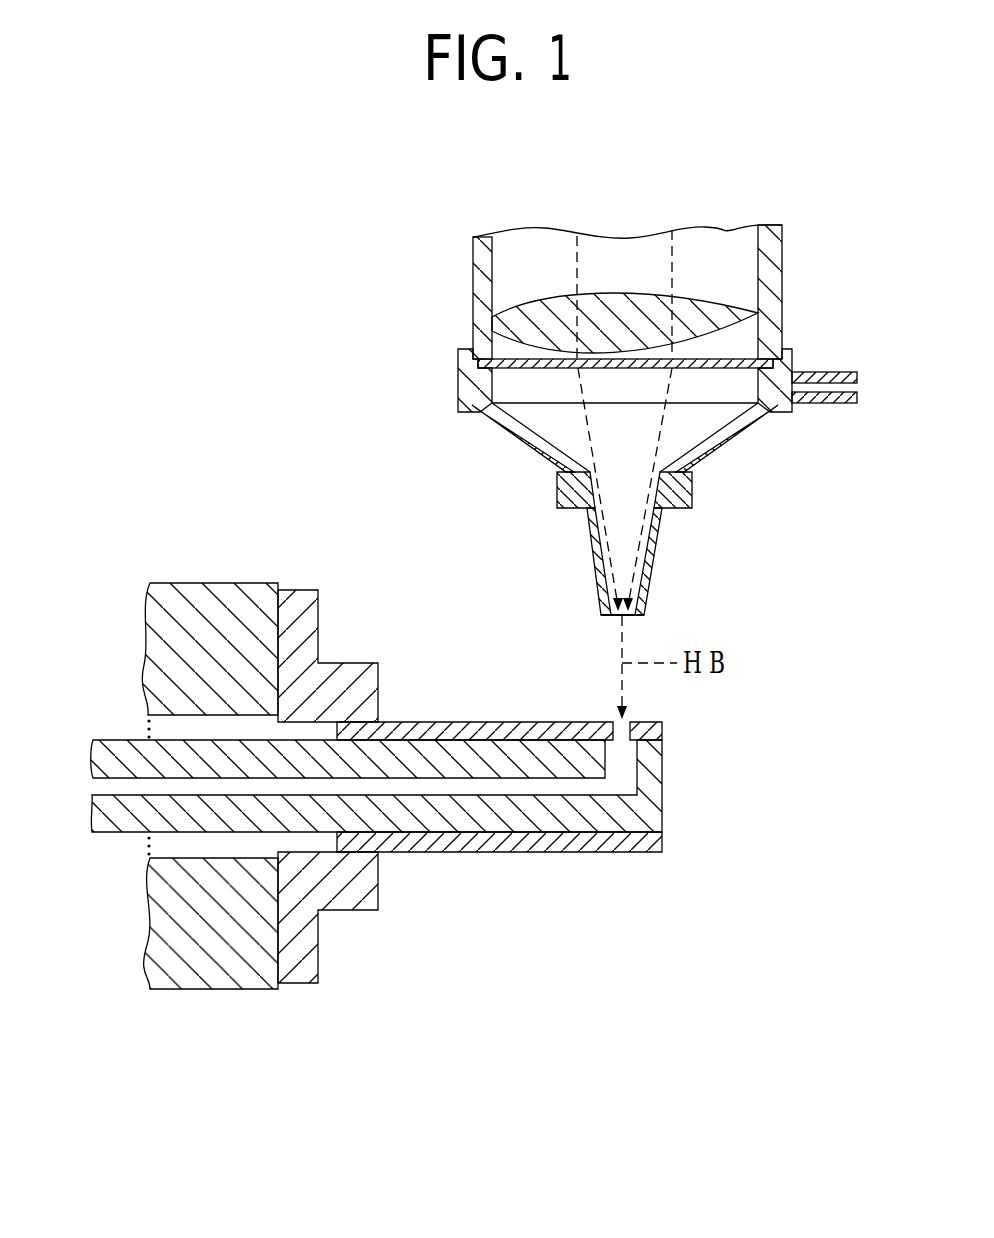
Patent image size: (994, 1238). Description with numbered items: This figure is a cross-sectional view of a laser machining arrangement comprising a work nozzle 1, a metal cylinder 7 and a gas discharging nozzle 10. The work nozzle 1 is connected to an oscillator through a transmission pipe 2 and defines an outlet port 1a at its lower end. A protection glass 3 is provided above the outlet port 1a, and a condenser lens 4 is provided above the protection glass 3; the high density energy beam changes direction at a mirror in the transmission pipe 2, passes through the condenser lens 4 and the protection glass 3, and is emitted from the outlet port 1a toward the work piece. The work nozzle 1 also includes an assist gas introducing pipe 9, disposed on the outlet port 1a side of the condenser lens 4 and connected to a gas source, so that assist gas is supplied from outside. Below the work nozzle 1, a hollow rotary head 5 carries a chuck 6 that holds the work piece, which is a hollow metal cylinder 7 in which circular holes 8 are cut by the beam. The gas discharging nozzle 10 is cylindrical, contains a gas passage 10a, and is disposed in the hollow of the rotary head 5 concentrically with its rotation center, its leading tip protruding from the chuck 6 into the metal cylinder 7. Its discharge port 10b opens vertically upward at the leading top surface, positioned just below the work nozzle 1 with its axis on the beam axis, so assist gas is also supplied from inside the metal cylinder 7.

The work nozzle 1 is at (650, 578).
The outlet port 1a is at (613, 618).
The transmission pipe 2 is at (782, 270).
The protection glass 3 is at (530, 370).
The condenser lens 4 is at (530, 320).
The rotary head 5 is at (225, 583).
The chuck 6 is at (378, 680).
The metal cylinder 7 is at (533, 852).
The circular hole 8 is at (620, 723).
The assist gas introducing pipe 9 is at (835, 372).
The gas discharging nozzle 10 is at (662, 812).
The gas passage 10a is at (95, 787).
The discharge port 10b is at (633, 750).